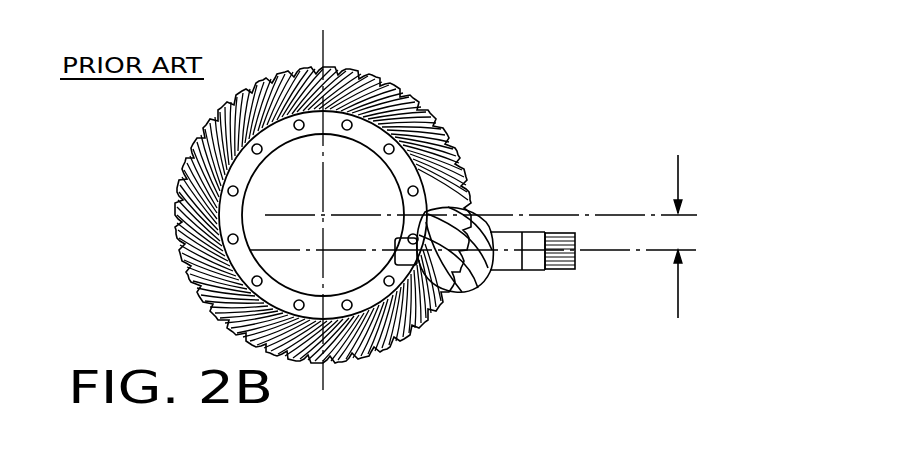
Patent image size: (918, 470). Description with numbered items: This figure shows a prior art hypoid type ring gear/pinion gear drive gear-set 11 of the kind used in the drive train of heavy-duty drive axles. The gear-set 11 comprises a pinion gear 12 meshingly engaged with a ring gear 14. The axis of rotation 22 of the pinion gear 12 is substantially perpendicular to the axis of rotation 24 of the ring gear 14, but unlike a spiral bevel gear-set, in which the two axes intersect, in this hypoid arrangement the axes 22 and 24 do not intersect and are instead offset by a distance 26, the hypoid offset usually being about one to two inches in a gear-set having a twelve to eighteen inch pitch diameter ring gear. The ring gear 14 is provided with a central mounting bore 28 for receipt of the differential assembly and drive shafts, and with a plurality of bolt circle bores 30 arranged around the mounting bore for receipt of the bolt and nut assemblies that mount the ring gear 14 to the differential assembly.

The gear-set 11 is at (401, 80).
The pinion gear 12 is at (510, 266).
The ring gear 14 is at (463, 163).
The axis of rotation of the pinion gear 22 is at (600, 252).
The axis of rotation of the ring gear 24 is at (320, 213).
The hypoid offset distance 26 is at (683, 233).
The mounting bore 28 is at (374, 148).
The bolt circle bores 30 is at (238, 238).